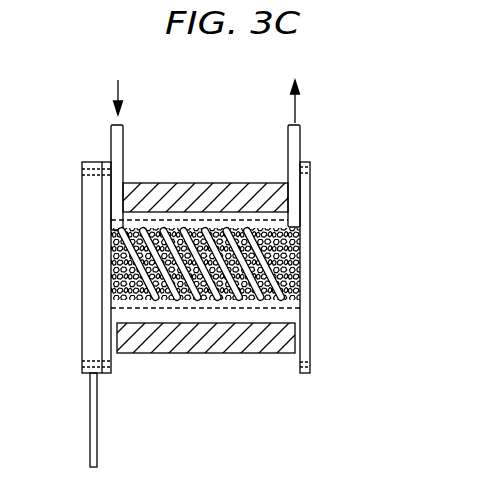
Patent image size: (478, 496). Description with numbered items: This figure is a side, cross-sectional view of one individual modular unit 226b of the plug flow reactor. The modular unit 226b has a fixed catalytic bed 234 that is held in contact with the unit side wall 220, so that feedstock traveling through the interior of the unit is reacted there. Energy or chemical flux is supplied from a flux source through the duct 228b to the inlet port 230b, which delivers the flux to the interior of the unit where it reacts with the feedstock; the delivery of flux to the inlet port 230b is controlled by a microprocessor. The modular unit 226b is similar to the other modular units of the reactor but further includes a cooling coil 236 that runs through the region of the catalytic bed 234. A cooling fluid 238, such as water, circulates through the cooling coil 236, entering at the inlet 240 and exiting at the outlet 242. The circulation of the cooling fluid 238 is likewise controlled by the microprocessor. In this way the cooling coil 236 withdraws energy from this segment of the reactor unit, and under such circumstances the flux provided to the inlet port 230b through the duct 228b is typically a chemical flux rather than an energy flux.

The unit side wall 220 is at (205, 174).
The modular unit 226b is at (202, 188).
The duct 228b is at (97, 435).
The inlet port 230b is at (82, 163).
The fixed catalytic bed 234 is at (242, 292).
The cooling coil 236 is at (275, 273).
The cooling fluid 238 is at (125, 97).
The inlet 240 is at (121, 135).
The outlet 242 is at (295, 140).